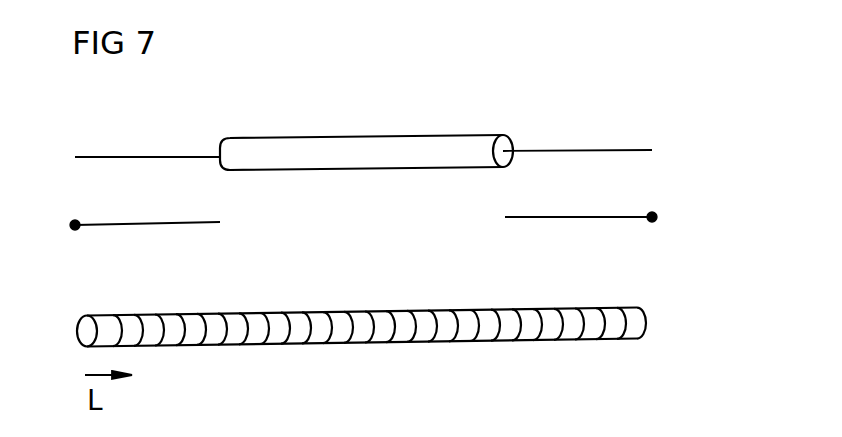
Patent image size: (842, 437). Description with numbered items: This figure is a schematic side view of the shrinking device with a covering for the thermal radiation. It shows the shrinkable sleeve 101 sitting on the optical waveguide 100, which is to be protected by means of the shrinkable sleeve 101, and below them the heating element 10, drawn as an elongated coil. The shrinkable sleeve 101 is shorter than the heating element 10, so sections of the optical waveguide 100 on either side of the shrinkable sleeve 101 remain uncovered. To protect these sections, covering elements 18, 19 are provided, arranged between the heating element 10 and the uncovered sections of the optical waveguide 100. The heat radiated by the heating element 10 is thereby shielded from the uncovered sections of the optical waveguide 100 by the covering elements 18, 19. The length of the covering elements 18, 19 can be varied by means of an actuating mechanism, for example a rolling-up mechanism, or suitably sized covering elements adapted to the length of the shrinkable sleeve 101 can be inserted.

The optical waveguide 100 is at (151, 157).
The shrinkable sleeve 101 is at (370, 144).
The covering element 18 is at (148, 222).
The covering element 19 is at (578, 216).
The heating element 10 is at (550, 333).